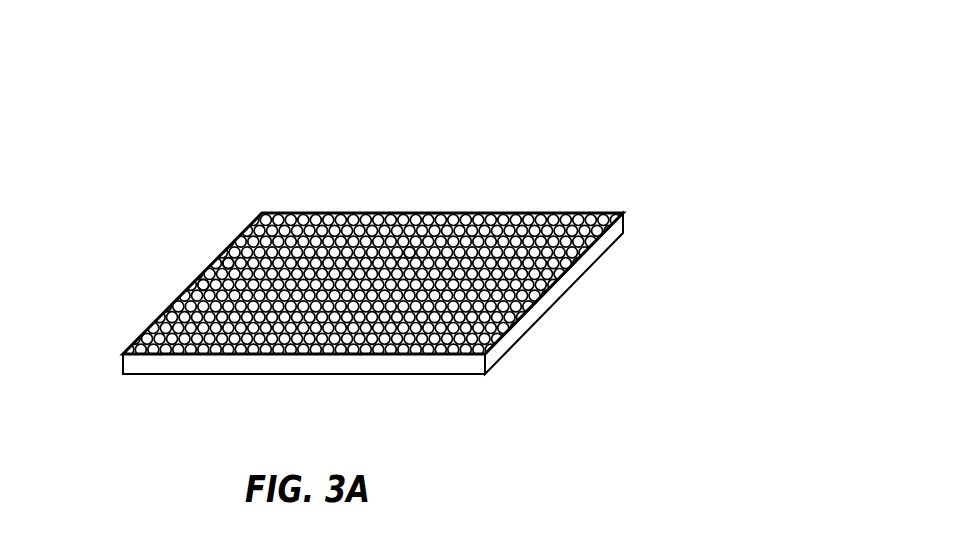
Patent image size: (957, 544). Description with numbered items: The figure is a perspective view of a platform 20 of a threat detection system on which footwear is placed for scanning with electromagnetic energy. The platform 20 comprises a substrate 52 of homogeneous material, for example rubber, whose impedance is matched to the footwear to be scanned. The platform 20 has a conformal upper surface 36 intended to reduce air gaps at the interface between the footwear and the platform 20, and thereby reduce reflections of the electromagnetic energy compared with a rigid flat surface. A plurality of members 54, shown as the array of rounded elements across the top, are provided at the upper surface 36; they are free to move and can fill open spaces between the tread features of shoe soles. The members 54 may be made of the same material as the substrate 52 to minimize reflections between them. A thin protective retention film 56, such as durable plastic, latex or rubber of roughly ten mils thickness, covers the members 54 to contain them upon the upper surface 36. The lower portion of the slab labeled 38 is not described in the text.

The platform 20 is at (416, 292).
The upper surface 36 is at (407, 250).
The bottom surface 38 is at (415, 376).
The substrate 52 is at (130, 363).
The members 54 is at (198, 290).
The film 56 is at (308, 213).